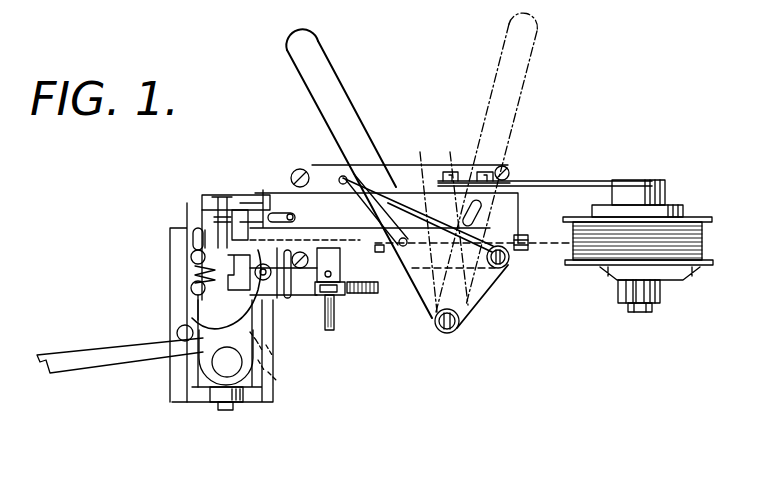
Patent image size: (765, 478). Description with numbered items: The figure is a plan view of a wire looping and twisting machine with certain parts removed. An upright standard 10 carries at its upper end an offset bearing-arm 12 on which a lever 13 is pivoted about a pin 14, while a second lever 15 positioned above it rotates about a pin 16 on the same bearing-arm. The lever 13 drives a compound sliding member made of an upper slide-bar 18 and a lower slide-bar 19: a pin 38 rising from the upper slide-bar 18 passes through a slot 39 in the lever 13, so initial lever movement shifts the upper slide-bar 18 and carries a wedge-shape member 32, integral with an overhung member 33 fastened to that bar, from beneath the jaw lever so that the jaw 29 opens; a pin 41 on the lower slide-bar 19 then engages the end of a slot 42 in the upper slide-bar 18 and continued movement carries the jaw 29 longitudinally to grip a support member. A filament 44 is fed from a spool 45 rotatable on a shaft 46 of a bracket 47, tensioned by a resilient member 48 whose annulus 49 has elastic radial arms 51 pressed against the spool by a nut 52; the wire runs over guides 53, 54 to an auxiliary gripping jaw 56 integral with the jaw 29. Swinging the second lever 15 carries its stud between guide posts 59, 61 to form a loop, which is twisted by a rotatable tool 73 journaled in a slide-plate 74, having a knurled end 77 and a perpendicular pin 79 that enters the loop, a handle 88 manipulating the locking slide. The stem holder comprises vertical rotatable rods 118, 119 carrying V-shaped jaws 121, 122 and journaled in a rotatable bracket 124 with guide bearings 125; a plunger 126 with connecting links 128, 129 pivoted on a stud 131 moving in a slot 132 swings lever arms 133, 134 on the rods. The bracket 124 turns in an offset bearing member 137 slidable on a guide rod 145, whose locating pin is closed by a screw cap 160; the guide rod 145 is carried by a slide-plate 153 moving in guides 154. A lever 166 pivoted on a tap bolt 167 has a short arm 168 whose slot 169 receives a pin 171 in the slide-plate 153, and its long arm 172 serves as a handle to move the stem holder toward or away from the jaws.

The standard 10 is at (324, 167).
The offset bearing-arm 12 is at (482, 300).
The lever 13 is at (519, 116).
The pin 14 is at (457, 328).
The second lever 15 is at (426, 168).
The pin 16 is at (512, 262).
The upper slide-bar 18 is at (379, 230).
The lower slide-bar 19 is at (208, 194).
The jaw 29 is at (226, 289).
The wedge-shape member 32 is at (222, 192).
The overhung member 33 is at (285, 195).
The pin 38 is at (412, 164).
The slot 39 is at (398, 258).
The pin 41 is at (290, 213).
The slot 42 is at (295, 222).
The filament 44 is at (543, 240).
The spool 45 is at (696, 212).
The shaft 46 is at (646, 312).
The bracket 47 is at (600, 180).
The resilient member 48 is at (610, 285).
The annulus 49 is at (632, 312).
The elastic radial arms 51 is at (687, 276).
The nut 52 is at (658, 302).
The guide 53 is at (522, 235).
The guide 54 is at (384, 242).
The auxiliary gripping jaw 56 is at (267, 238).
The guide post 59 is at (340, 259).
The guide post 61 is at (333, 249).
The rotatable tool 73 is at (338, 303).
The slide-plate 74 is at (347, 298).
The end of the tool 77 is at (328, 330).
The pin 79 is at (328, 265).
The handle 88 is at (334, 290).
The vertical rotatable rod 118 is at (195, 298).
The vertical rotatable rod 119 is at (190, 250).
The V-shaped jaw 121 is at (192, 278).
The V-shaped jaw 122 is at (188, 270).
The rotatable bracket 124 is at (195, 248).
The guide bearings 125 is at (198, 317).
The plunger 126 is at (303, 268).
The connecting link 128 is at (253, 333).
The connecting link 129 is at (190, 220).
The stud 131 is at (282, 292).
The slot 132 is at (270, 300).
The lever arm 133 is at (190, 340).
The lever arm 134 is at (193, 247).
The offset bearing member 137 is at (202, 368).
The guide rod 145 is at (250, 370).
The slide-plate 153 is at (200, 363).
The guides 154 is at (203, 403).
The screw cap 160 is at (227, 410).
The lever 166 is at (203, 338).
The tap bolt 167 is at (203, 352).
The short arm 168 is at (270, 392).
The slot 169 is at (237, 403).
The pin 171 is at (280, 376).
The long arm 172 is at (52, 372).